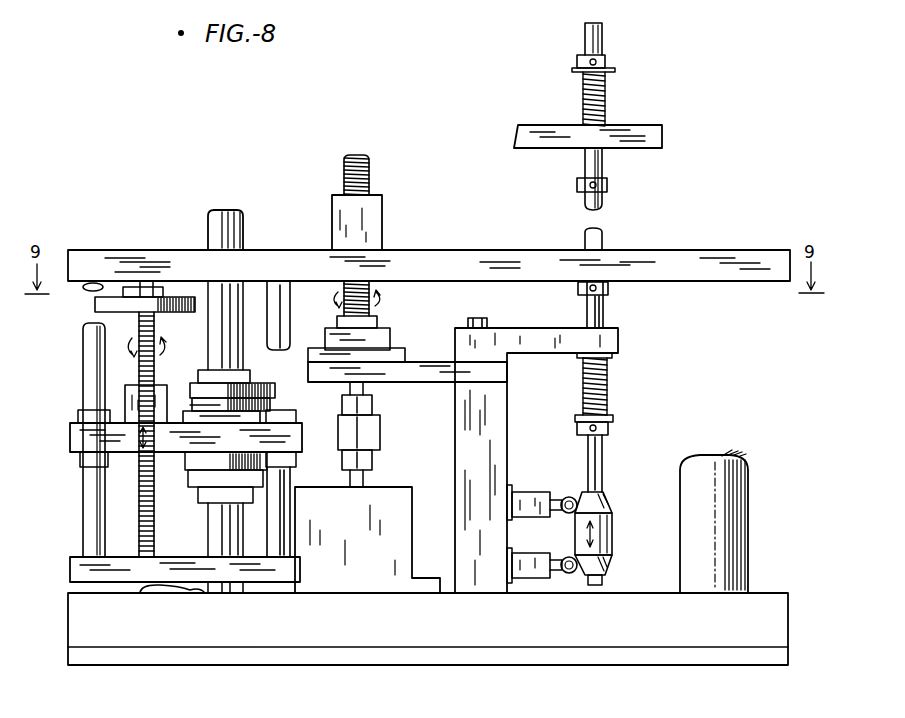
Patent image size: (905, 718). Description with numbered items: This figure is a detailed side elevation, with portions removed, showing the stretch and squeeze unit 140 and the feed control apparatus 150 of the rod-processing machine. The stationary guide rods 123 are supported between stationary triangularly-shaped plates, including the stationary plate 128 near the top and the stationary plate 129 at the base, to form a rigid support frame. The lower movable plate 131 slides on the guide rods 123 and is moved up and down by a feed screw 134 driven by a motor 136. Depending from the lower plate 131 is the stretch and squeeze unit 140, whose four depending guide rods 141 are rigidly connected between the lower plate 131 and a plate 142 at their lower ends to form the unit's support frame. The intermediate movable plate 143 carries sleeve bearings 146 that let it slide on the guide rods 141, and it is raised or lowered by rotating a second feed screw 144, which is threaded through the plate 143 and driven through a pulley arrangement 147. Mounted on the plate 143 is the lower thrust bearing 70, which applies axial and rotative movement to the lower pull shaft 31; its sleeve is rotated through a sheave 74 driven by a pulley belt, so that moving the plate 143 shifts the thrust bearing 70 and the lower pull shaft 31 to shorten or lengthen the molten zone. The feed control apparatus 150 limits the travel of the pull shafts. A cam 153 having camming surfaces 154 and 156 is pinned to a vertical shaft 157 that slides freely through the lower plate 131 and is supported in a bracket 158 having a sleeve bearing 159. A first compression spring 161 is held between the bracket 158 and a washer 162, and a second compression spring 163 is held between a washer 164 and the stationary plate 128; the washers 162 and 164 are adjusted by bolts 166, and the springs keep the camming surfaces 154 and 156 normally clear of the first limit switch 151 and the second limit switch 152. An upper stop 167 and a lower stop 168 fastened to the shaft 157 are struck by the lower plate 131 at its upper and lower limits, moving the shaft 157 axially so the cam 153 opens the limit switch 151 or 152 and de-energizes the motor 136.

The lower pull shaft 31 is at (243, 233).
The thrust bearing 70 is at (241, 293).
The sheave 74 is at (258, 383).
The guide rods 123 is at (735, 581).
The stationary plate 128 is at (525, 127).
The stationary plate 129 is at (780, 625).
The lower movable plate 131 is at (392, 250).
The feed screw 134 is at (370, 168).
The motor 136 is at (385, 487).
The stretch and squeeze unit 140 is at (186, 494).
The depending guide rods 141 is at (90, 478).
The plate 142 is at (295, 580).
The intermediate movable plate 143 is at (292, 442).
The second feed screw 144 is at (155, 531).
The sleeve bearings 146 is at (100, 458).
The pulley arrangement 147 is at (95, 305).
The feed control apparatus 150 is at (655, 472).
The first limit switch 151 is at (560, 495).
The second limit switch 152 is at (545, 558).
The cam 153 is at (608, 539).
The camming surface 154 is at (586, 507).
The camming surface 156 is at (606, 568).
The vertical shaft 157 is at (586, 163).
The bracket 158 is at (497, 335).
The sleeve bearing 159 is at (578, 357).
The first compression spring 161 is at (583, 386).
The washer 162 is at (576, 418).
The second compression spring 163 is at (582, 88).
The washer 164 is at (612, 69).
The bolts 166 is at (578, 58).
The upper stop 167 is at (577, 190).
The lower stop 168 is at (578, 285).